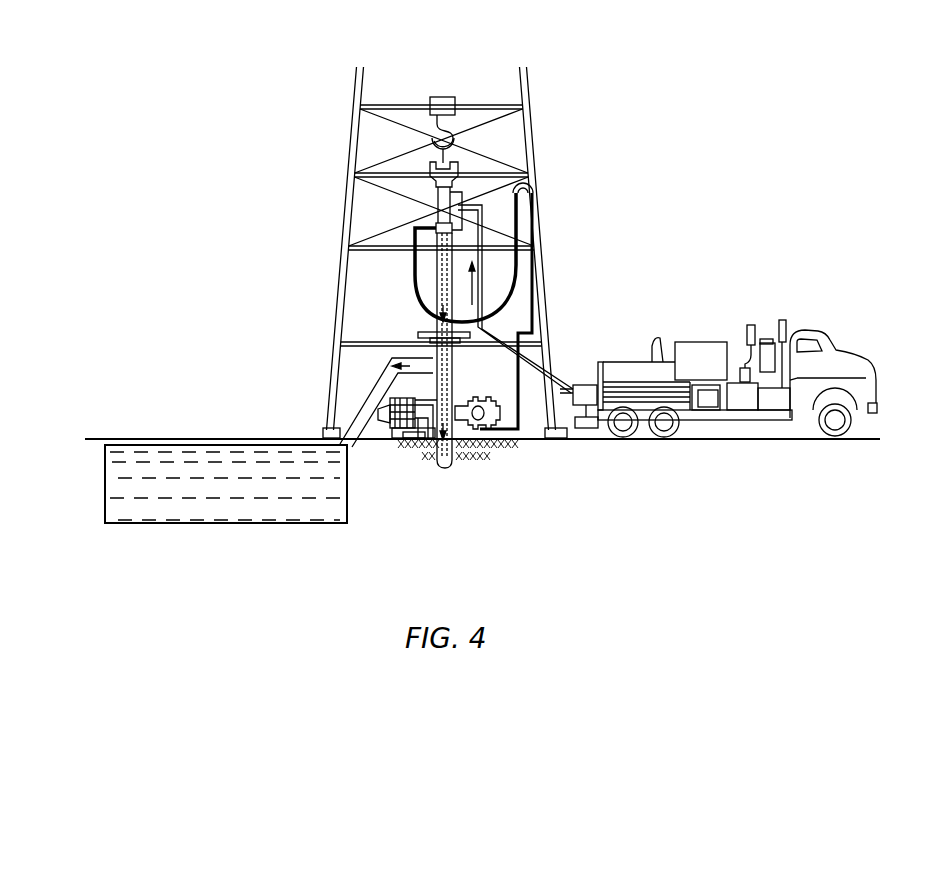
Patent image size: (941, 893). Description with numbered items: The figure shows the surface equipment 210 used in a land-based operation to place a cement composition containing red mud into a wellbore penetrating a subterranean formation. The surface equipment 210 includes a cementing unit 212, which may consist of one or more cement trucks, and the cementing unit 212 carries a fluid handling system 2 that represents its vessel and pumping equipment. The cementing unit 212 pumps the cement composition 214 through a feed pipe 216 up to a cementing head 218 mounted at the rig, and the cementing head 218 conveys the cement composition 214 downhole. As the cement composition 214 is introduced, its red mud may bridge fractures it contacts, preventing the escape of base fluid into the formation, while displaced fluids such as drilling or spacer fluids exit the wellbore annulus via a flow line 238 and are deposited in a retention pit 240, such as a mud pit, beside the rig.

The fluid handling system 2 is at (716, 313).
The surface equipment 210 is at (755, 105).
The cementing unit 212 is at (778, 438).
The cement composition 214 is at (440, 282).
The feed pipe 216 is at (532, 358).
The cementing head 218 is at (474, 165).
The flow line 238 is at (363, 430).
The retention pit 240 is at (152, 530).